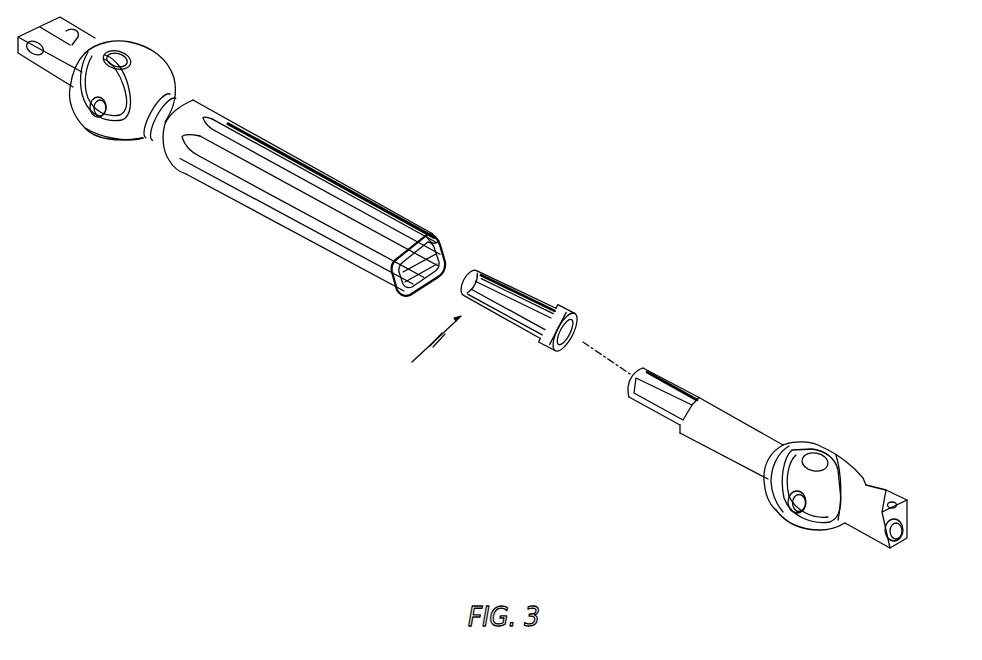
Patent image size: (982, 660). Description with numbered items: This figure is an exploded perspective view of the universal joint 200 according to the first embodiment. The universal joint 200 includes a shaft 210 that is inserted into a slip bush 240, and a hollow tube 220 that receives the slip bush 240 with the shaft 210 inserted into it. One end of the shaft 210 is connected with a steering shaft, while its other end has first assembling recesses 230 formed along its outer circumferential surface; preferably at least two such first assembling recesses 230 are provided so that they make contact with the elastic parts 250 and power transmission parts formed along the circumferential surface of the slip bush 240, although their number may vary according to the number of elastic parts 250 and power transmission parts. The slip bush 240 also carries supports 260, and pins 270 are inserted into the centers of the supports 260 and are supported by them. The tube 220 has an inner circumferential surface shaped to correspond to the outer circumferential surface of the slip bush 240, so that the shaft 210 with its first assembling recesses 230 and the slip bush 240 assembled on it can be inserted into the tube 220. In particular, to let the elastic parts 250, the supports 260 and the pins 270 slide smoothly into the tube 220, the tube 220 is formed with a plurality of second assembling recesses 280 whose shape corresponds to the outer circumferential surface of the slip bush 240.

The universal joint 200 is at (564, 224).
The shaft 210 is at (697, 435).
The tube 220 is at (307, 207).
The first assembling recesses 230 is at (640, 390).
The slip bush 240 is at (419, 351).
The elastic parts 250 is at (505, 330).
The supports 260 is at (543, 340).
The pins 270 is at (498, 305).
The second assembling recesses 280 is at (433, 236).